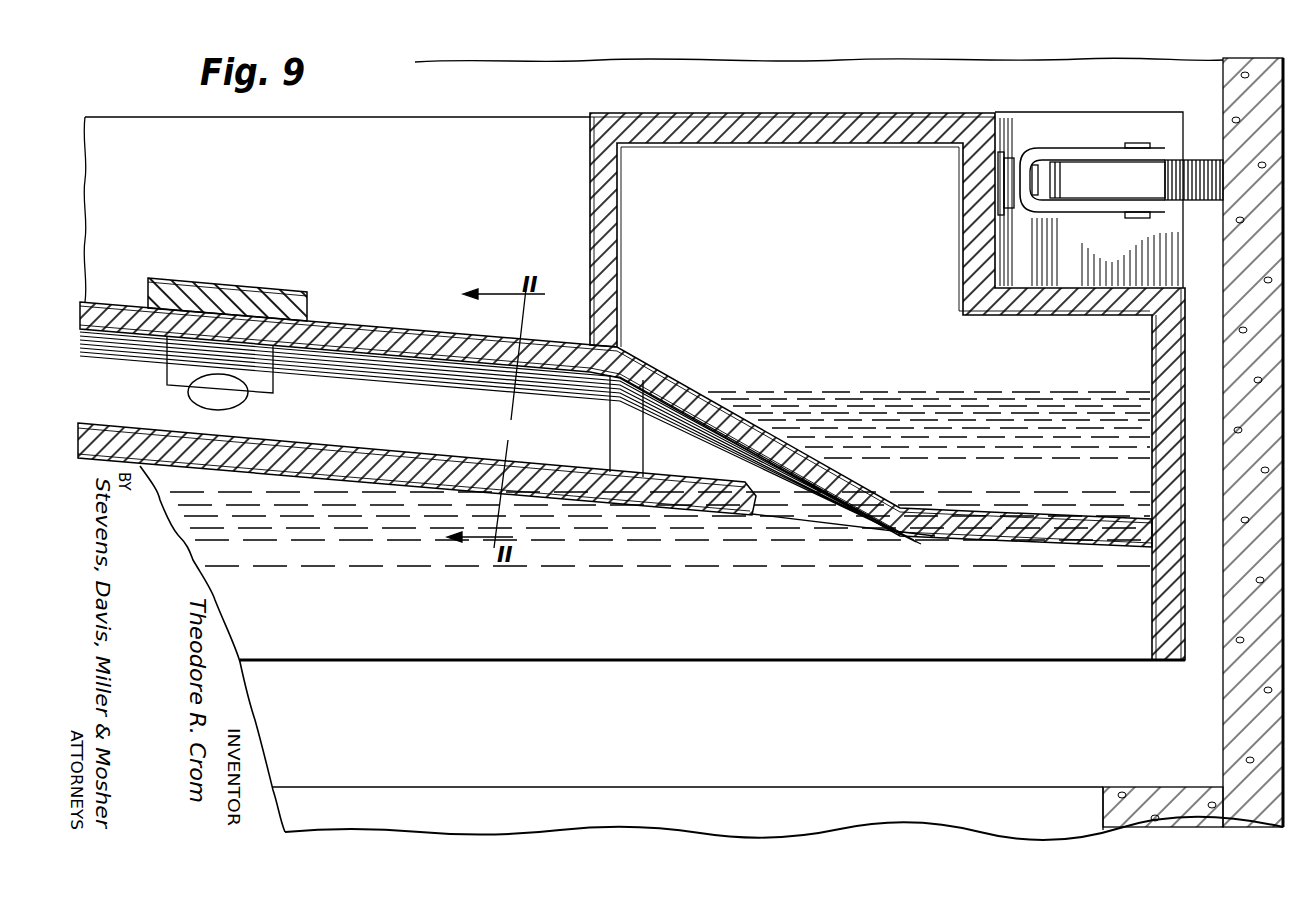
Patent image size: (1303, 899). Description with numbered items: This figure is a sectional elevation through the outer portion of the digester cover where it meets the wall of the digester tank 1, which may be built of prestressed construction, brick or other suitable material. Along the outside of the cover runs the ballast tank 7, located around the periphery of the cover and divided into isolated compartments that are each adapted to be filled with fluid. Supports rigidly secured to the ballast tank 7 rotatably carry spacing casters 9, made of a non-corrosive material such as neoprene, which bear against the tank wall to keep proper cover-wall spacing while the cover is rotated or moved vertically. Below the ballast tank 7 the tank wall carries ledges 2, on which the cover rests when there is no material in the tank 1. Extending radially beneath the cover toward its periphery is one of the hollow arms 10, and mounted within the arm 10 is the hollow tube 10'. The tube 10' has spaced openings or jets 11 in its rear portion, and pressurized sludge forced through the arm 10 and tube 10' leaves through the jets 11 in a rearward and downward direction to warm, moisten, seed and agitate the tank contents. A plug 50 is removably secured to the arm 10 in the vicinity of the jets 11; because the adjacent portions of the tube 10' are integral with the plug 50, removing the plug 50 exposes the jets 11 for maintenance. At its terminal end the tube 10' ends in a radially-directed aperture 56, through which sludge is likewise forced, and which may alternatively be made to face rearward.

The digester tank 1 is at (1240, 68).
The ledges 2 is at (1160, 803).
The ballast tank 7 is at (757, 160).
The spacing casters 9 is at (1096, 155).
The radial hollow arms 10 is at (616, 417).
The hollow tube 10' is at (417, 464).
The openings or jets 11 is at (233, 393).
The plugs 50 is at (257, 300).
The radially-directed aperture 56 is at (818, 510).